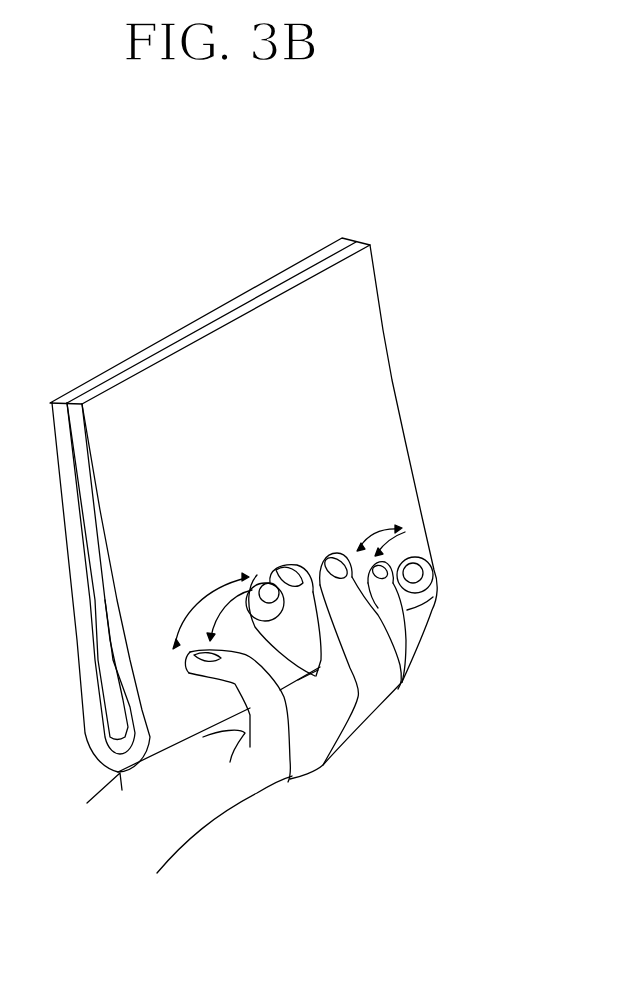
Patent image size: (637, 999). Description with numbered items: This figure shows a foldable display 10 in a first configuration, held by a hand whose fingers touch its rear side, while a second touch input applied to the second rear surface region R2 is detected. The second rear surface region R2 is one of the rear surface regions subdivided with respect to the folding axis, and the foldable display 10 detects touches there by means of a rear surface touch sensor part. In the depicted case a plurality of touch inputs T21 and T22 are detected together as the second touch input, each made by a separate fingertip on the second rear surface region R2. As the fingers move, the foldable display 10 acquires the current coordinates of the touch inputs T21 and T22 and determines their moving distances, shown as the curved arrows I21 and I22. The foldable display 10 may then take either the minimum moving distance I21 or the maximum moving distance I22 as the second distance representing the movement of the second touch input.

The foldable display 10 is at (441, 201).
The second rear surface region R2 is at (363, 378).
The touch input T22 is at (258, 580).
The touch input T21 is at (411, 557).
The minimum moving distance I21 is at (377, 529).
The maximum moving distance I22 is at (208, 607).